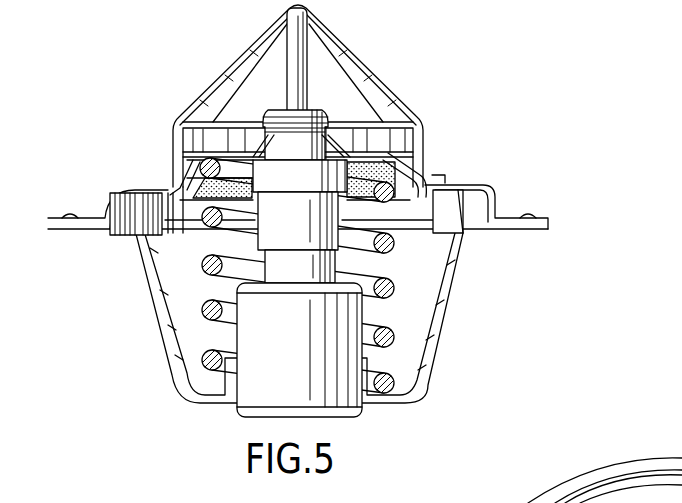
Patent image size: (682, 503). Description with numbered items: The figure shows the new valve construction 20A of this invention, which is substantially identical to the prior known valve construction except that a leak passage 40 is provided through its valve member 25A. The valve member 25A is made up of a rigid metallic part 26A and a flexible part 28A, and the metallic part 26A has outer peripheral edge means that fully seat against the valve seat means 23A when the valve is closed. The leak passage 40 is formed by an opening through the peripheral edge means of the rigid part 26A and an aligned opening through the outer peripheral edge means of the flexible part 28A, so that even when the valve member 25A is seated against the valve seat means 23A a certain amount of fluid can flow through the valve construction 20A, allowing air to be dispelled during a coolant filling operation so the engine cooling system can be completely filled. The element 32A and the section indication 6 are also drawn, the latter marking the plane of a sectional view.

The valve construction 20A is at (430, 81).
The valve seat means 23A is at (425, 174).
The valve member 25A is at (396, 160).
The metallic part 26A is at (418, 170).
The flexible part 28A is at (408, 192).
The thermally responsive actuator 32A is at (226, 335).
The leak passage 40 is at (180, 216).
The section line 6- 6 is at (34, 267).